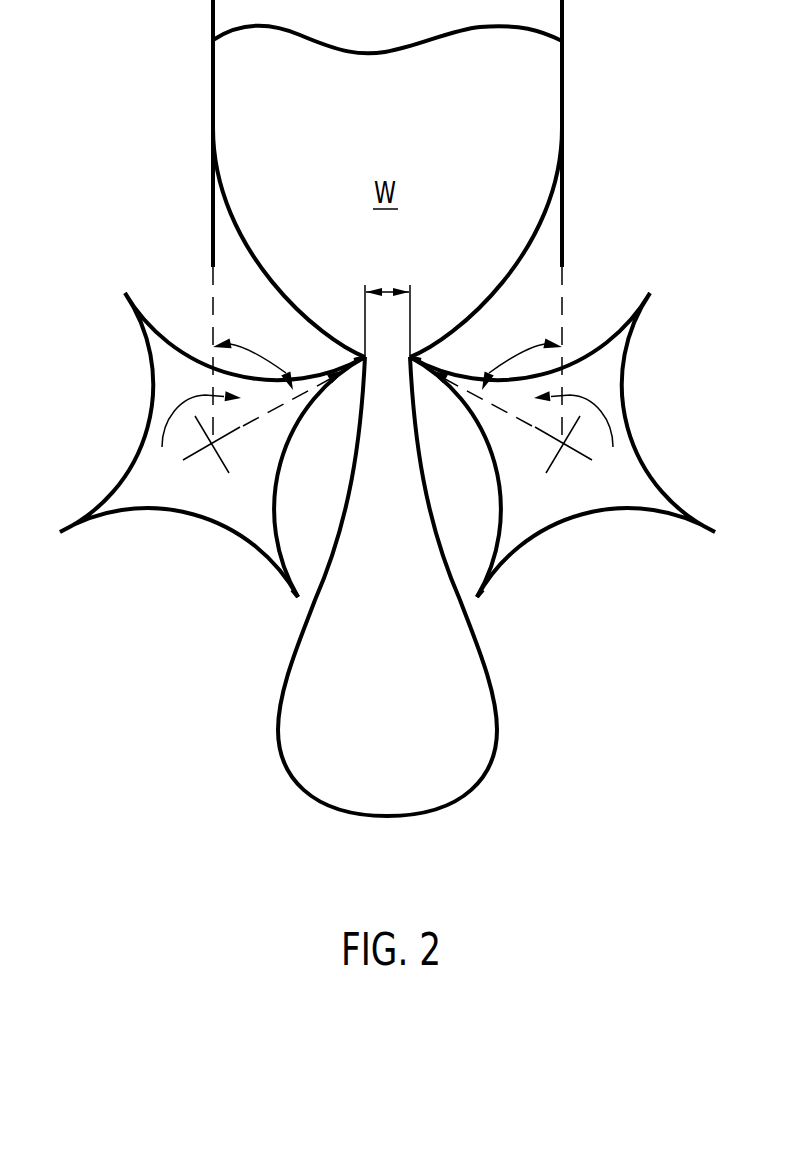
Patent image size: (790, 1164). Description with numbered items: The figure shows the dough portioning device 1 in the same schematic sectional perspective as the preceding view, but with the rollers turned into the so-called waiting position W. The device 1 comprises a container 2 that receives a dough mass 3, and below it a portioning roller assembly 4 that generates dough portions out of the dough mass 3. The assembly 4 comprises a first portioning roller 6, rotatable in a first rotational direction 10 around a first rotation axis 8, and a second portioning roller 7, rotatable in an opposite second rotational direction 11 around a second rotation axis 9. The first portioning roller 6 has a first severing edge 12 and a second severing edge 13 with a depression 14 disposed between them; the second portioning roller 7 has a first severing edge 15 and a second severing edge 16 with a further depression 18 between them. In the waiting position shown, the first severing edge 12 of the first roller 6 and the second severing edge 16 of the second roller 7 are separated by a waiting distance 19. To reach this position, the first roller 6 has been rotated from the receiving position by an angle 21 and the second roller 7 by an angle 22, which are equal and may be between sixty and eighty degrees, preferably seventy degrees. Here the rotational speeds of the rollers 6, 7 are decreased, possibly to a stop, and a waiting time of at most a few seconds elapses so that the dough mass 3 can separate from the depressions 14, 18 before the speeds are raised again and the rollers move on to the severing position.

The dough portioning device 1 is at (143, 45).
The container 2 is at (170, 140).
The dough mass 3 is at (375, 142).
The portioning roller assembly 4 is at (73, 398).
The first portioning roller 6 is at (130, 478).
The second portioning roller 7 is at (645, 478).
The first rotation axis 8 is at (201, 453).
The second rotation axis 9 is at (574, 453).
The first rotational direction 10 is at (175, 410).
The second rotational direction 11 is at (600, 410).
The first severing edge of the first portioning roller 12 is at (359, 356).
The second severing edge of the first portioning roller 13 is at (296, 600).
The depression 14 is at (304, 476).
The first severing edge of the second portioning roller 15 is at (479, 600).
The second severing edge of the second portioning roller 16 is at (416, 356).
The further depression 18 is at (471, 476).
The waiting distance 19 is at (387, 289).
The angle 21 is at (256, 349).
The angle 22 is at (520, 349).